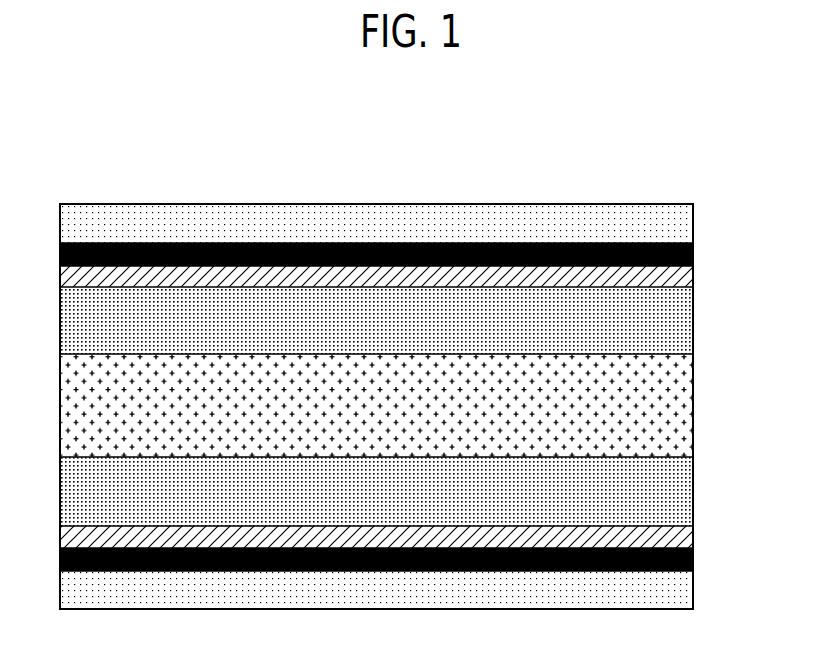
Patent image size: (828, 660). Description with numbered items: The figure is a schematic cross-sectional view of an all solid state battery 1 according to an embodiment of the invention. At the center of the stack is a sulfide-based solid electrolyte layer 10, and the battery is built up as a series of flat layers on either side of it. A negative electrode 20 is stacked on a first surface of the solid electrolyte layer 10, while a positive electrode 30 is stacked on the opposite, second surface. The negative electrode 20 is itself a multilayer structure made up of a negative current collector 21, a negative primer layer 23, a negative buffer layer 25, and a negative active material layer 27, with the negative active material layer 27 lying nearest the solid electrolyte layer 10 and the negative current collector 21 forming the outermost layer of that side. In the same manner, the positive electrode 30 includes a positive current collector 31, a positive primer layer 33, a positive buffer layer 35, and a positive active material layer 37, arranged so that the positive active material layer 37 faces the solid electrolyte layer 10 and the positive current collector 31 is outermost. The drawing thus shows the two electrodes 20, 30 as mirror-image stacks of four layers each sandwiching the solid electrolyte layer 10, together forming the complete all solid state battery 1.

The all solid state battery 1 is at (364, 166).
The solid electrolyte layer 10 is at (693, 405).
The negative electrode 20 is at (423, 533).
The negative current collector 21 is at (404, 590).
The negative primer layer 23 is at (693, 555).
The negative buffer layer 25 is at (693, 537).
The negative active material layer 27 is at (693, 485).
The positive electrode 30 is at (423, 279).
The positive current collector 31 is at (693, 220).
The positive primer layer 33 is at (693, 255).
The positive buffer layer 35 is at (693, 277).
The positive active material layer 37 is at (404, 320).